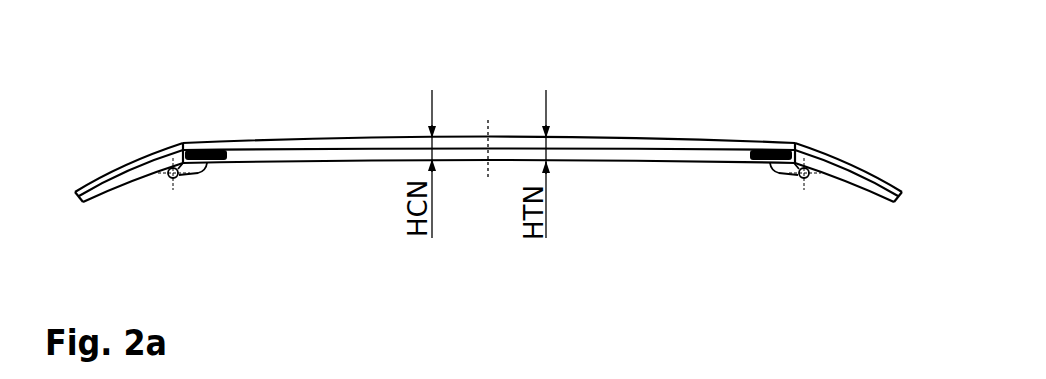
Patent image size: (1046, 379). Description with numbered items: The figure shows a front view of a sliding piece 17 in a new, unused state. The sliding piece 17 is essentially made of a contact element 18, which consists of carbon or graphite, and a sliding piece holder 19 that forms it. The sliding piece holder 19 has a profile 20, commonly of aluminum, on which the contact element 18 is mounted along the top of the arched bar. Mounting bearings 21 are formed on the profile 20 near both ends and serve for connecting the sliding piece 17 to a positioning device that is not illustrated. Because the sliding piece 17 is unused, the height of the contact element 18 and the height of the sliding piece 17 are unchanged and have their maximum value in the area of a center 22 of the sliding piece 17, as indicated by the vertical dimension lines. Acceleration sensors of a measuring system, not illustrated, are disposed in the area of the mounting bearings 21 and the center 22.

The sliding piece 17 is at (875, 97).
The contact element 18 is at (613, 137).
The sliding piece holder 19 is at (707, 164).
The profile 20 is at (688, 160).
The mounting bearings 21 is at (164, 182).
The center 22 is at (493, 136).